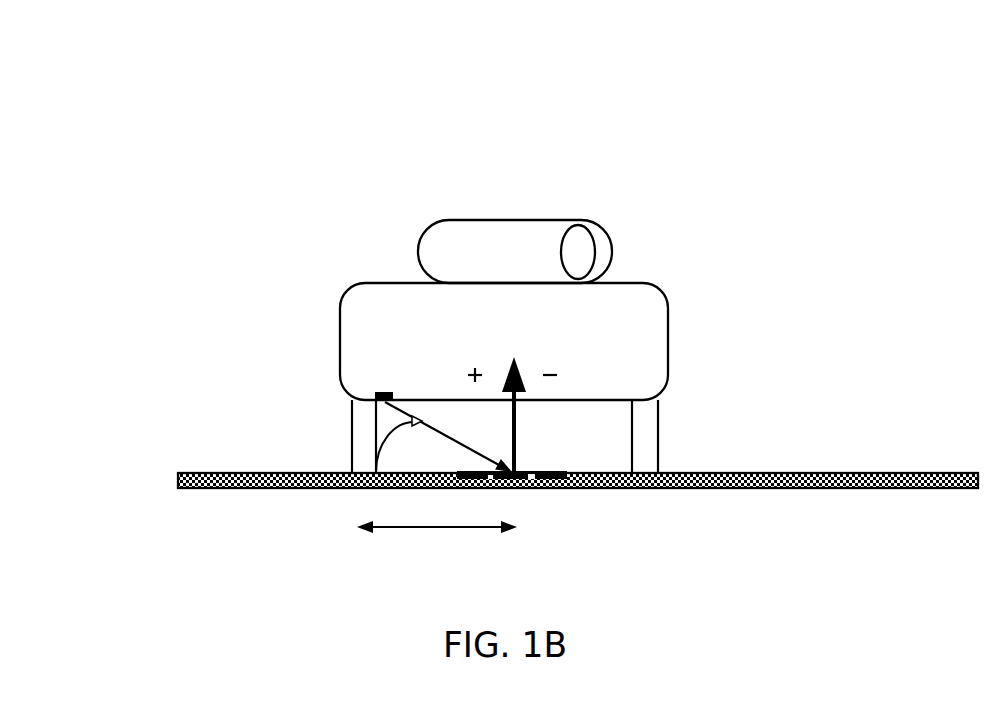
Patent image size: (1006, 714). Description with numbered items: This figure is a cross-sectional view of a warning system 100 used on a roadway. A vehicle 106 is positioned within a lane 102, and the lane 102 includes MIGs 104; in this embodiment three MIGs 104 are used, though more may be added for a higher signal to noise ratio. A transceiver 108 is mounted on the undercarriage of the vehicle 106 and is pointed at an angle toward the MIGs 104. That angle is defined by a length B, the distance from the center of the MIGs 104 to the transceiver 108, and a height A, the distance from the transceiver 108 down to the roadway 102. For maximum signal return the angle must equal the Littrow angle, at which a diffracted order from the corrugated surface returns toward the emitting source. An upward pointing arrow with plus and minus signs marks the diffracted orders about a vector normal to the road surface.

The warning system 100 is at (104, 141).
The lane 102 is at (617, 497).
The MIGs 104 is at (526, 500).
The vehicle 106 is at (346, 272).
The transceiver 108 is at (368, 391).